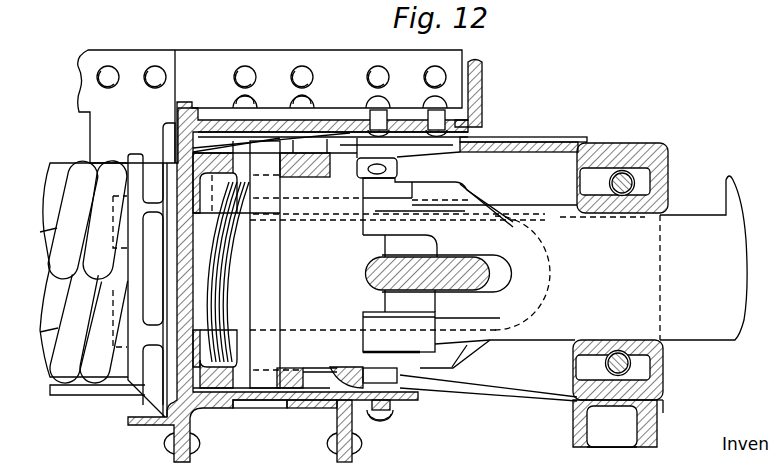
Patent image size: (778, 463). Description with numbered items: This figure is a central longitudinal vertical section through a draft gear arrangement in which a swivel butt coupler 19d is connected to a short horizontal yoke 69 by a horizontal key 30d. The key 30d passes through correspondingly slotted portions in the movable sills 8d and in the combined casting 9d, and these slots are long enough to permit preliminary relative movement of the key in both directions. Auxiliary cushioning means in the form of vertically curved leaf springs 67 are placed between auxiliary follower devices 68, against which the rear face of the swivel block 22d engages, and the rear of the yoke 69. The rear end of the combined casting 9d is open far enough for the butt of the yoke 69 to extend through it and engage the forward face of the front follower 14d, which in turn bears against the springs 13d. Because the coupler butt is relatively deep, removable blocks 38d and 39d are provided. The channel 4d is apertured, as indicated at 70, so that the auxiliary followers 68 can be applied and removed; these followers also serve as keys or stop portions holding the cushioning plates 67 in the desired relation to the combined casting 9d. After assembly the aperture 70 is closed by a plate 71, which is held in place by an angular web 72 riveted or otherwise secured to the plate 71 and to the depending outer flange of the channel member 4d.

The channel 4d is at (216, 407).
The movable sills 8d is at (54, 165).
The combined casting 9d is at (510, 143).
The springs 13d is at (60, 367).
The front follower 14d is at (166, 124).
The swivel butt coupler 19d is at (706, 353).
The swivel block 22d is at (441, 266).
The horizontal key 30d is at (467, 268).
The removable block 38d is at (661, 189).
The removable block 39d is at (657, 390).
The vertically curved leaf springs 67 is at (223, 288).
The auxiliary follower devices 68 is at (270, 246).
The yoke 69 is at (178, 263).
The aperture 70 is at (267, 406).
The plate 71 is at (408, 399).
The angular web 72 is at (398, 414).